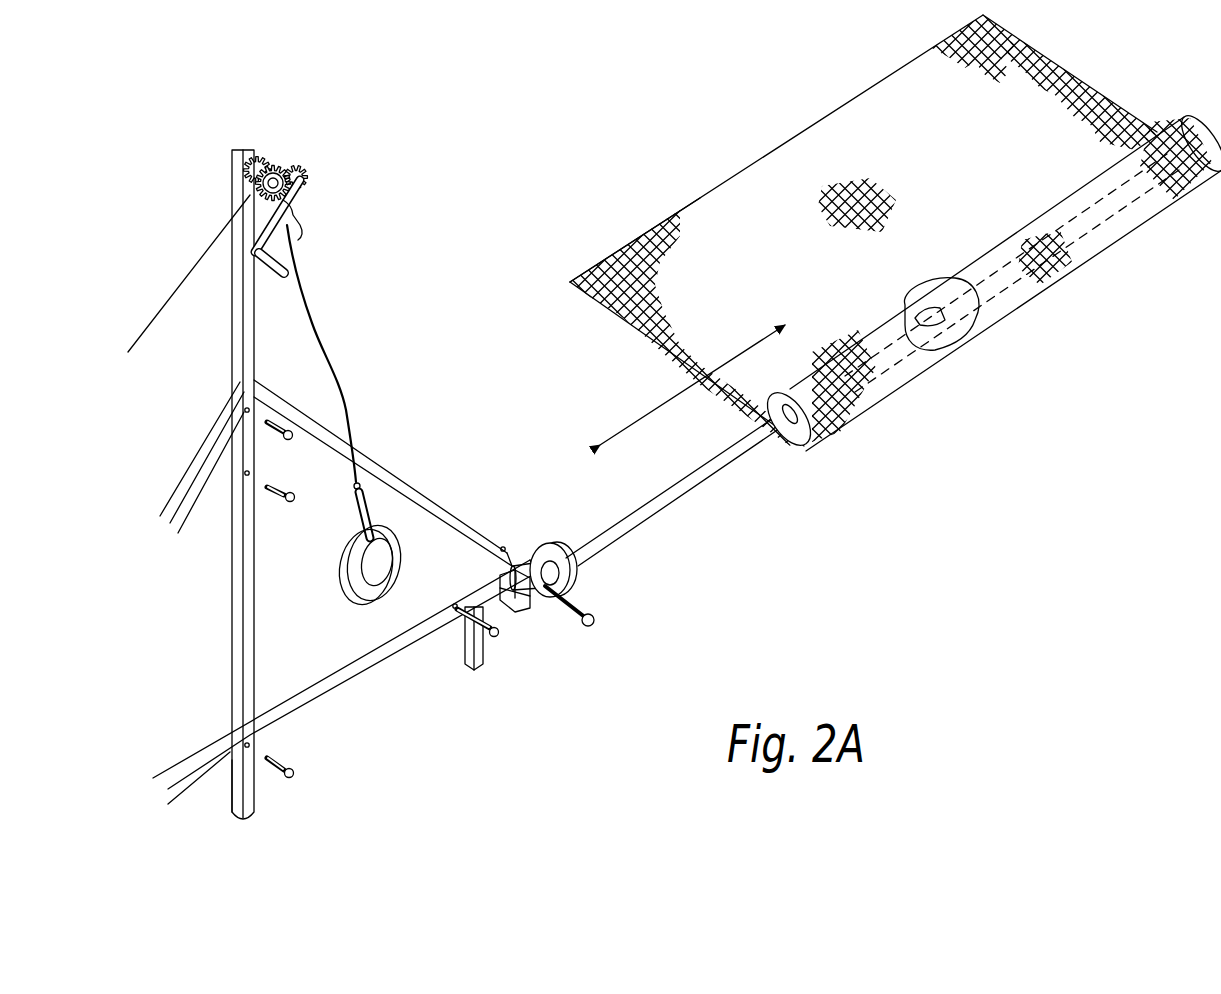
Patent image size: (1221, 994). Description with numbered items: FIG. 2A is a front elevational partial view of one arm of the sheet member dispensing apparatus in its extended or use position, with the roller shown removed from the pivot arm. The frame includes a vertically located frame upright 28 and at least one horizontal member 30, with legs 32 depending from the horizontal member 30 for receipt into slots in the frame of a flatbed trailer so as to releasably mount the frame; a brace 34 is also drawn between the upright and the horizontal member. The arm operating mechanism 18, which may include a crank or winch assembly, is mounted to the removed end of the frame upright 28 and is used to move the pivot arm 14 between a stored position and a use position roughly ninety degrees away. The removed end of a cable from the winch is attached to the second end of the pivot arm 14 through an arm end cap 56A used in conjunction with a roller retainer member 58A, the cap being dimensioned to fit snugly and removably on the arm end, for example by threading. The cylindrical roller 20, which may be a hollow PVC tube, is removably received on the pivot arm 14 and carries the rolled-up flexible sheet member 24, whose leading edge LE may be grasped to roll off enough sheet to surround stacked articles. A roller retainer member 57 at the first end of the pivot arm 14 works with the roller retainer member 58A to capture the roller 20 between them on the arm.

The pivot arm 14 is at (655, 514).
The arm operating mechanism 18 is at (330, 220).
The cylindrical roller 20 is at (796, 437).
The flexible sheet member 24 is at (863, 230).
The frame upright 28 is at (253, 553).
The horizontal member 30 is at (345, 678).
The legs 32 is at (232, 784).
The diagonal brace 34 is at (394, 474).
The arm end cap 56A is at (385, 563).
The roller retainer member 57 is at (543, 542).
The roller retainer member 58A is at (360, 600).
The leading edge LE is at (660, 217).